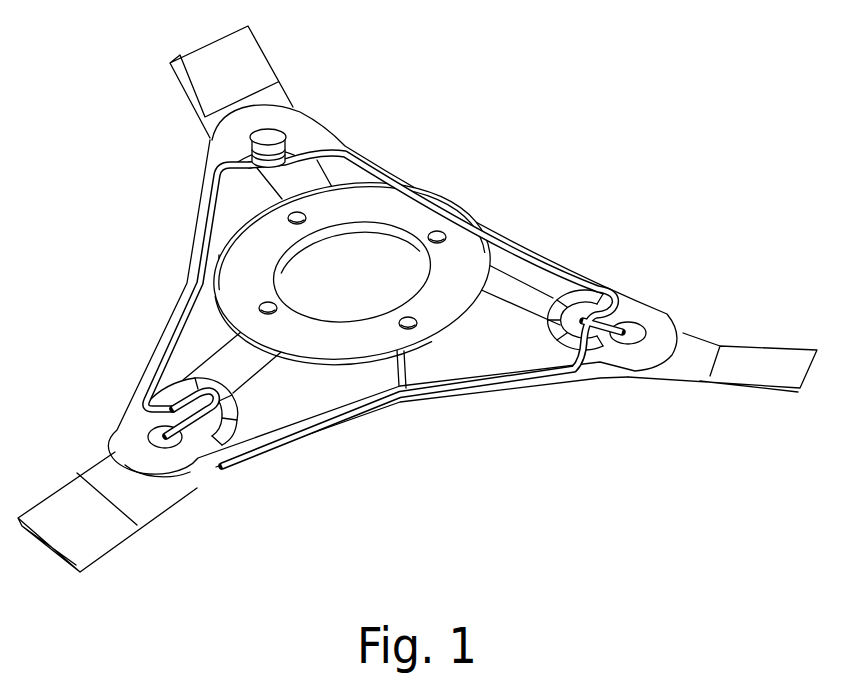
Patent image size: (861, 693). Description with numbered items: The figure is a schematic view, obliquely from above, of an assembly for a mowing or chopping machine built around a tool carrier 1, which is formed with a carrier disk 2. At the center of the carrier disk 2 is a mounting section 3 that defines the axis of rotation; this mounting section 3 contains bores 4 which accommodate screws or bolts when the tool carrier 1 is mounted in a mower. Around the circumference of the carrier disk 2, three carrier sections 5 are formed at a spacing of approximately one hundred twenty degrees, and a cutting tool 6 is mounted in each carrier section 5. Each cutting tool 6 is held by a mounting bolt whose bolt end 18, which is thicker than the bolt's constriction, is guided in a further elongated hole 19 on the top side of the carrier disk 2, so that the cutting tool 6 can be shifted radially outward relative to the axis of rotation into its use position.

The tool carrier 1 is at (343, 172).
The carrier disk 2 is at (503, 360).
The mounting section 3 is at (457, 257).
The bores 4 is at (447, 222).
The carrier sections 5 is at (297, 127).
The cutting tool 6 is at (243, 60).
The bolt end 18 is at (165, 436).
The further elongated hole 19 is at (197, 445).